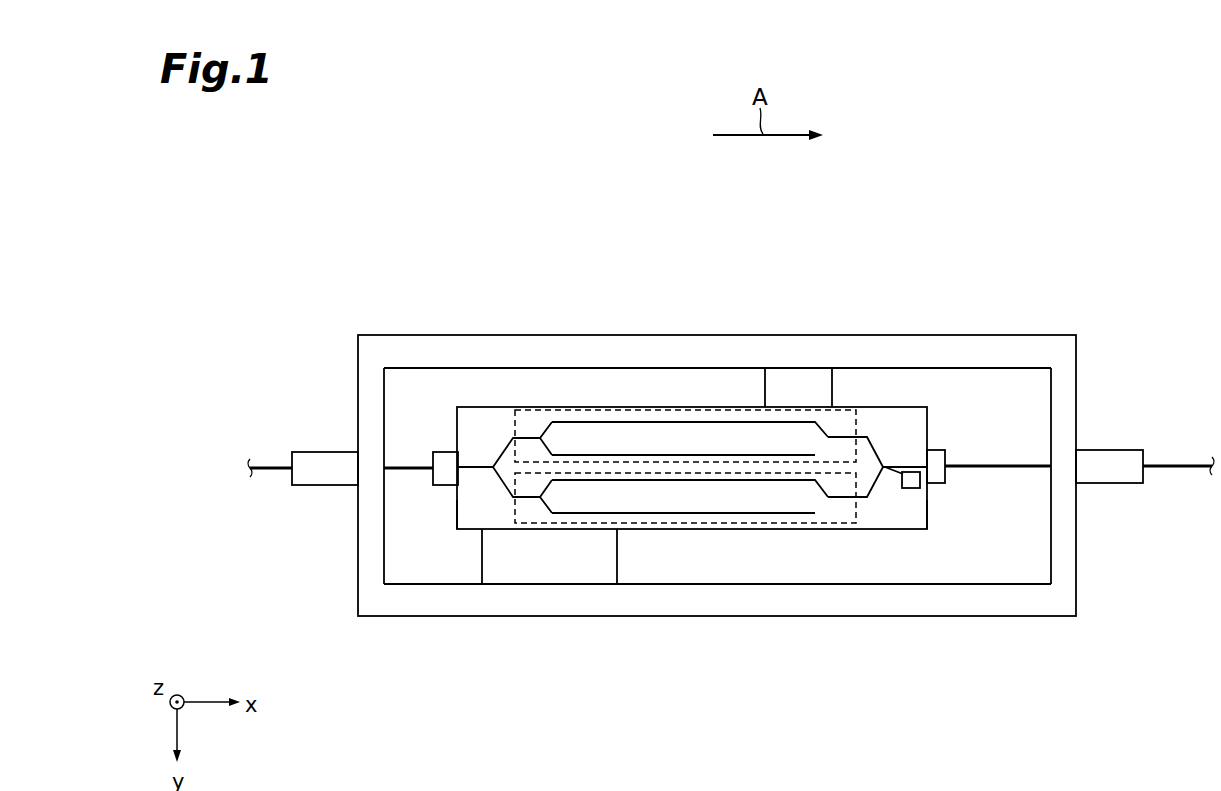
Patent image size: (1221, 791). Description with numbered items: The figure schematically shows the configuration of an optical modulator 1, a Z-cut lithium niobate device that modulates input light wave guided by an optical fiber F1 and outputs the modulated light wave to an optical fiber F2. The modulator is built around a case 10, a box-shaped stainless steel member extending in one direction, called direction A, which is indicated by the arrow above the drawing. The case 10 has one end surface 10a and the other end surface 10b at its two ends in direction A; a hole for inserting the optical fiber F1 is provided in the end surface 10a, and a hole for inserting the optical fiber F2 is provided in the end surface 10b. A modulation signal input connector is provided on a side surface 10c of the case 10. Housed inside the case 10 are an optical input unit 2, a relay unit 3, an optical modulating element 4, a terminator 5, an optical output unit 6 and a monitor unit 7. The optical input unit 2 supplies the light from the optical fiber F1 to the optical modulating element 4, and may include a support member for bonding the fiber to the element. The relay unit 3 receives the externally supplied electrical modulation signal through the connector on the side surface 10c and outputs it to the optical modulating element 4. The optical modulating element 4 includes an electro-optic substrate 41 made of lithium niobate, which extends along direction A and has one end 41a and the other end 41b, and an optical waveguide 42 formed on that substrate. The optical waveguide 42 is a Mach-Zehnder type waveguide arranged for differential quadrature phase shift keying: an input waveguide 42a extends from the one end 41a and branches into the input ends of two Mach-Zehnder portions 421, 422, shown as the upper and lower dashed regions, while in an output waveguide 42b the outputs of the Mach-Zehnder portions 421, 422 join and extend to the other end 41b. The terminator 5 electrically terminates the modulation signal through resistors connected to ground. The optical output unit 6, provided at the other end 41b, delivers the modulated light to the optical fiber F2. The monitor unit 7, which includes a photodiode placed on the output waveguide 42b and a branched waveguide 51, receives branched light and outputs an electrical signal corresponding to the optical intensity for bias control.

The optical modulator 1 is at (1078, 222).
The case 10 is at (716, 474).
The one end surface 10a is at (358, 559).
The other end surface 10b is at (1078, 375).
The side surface 10c is at (793, 617).
The optical input unit 2 is at (440, 460).
The relay unit 3 is at (595, 572).
The optical modulating element 4 is at (634, 472).
The electro-optic substrate 41 is at (468, 503).
The one end 41a is at (457, 517).
The other end 41b is at (927, 520).
The optical waveguide 42 is at (674, 472).
The input waveguide 42a is at (481, 470).
The output waveguide 42b is at (887, 465).
The Mach-Zehnder portion 421 is at (730, 407).
The Mach-Zehnder portion 422 is at (745, 523).
The terminator 5 is at (798, 388).
The branched waveguide 51 is at (892, 480).
The optical output unit 6 is at (945, 458).
The monitor unit 7 is at (908, 490).
The optical fiber F1 is at (272, 466).
The optical fiber F2 is at (1180, 465).